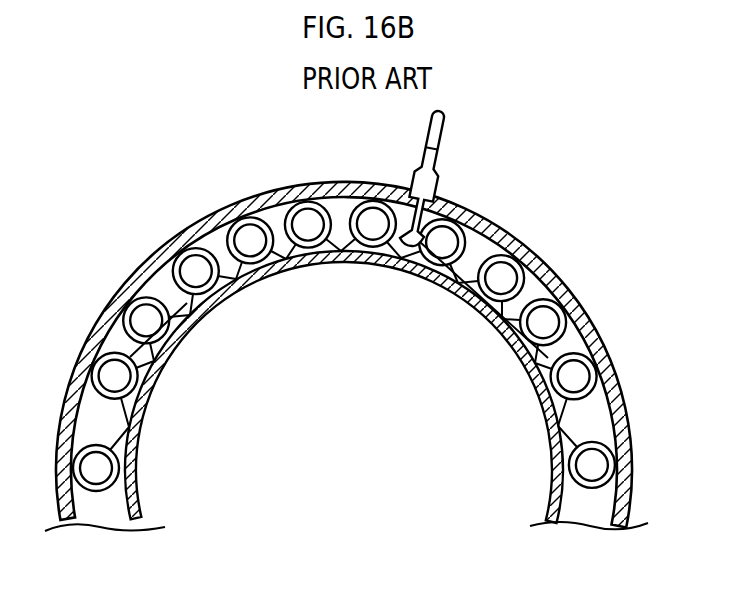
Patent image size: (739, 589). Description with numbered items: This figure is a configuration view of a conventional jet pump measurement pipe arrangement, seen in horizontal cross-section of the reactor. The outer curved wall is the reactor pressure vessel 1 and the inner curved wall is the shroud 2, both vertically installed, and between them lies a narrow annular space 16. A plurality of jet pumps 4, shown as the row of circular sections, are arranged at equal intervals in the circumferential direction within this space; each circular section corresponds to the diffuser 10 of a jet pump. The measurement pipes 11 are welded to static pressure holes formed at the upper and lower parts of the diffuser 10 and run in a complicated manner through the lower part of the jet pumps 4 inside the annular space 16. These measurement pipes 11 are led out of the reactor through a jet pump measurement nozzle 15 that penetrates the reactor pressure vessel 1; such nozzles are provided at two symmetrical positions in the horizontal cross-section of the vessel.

The reactor pressure vessel 1 is at (368, 319).
The shroud 2 is at (541, 397).
The jet pump 4 is at (519, 253).
The diffuser 10 is at (570, 313).
The measurement pipe 11 is at (195, 320).
The jet pump measurement nozzle 15 is at (426, 175).
The annular space 16 is at (377, 346).